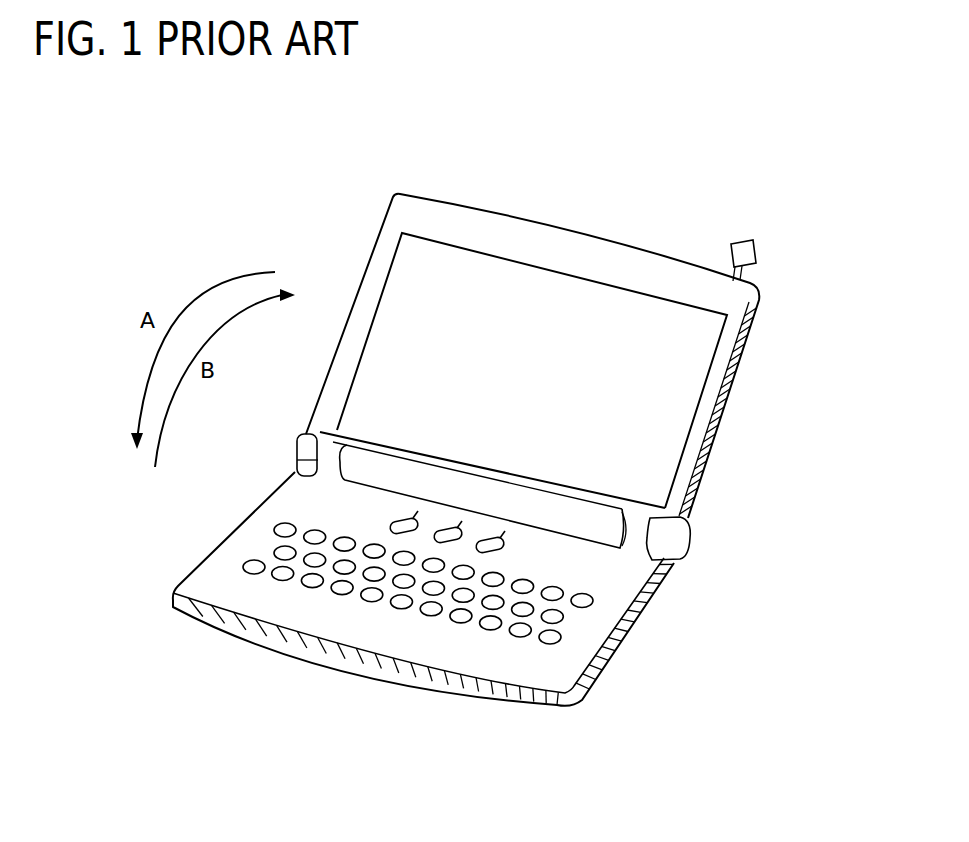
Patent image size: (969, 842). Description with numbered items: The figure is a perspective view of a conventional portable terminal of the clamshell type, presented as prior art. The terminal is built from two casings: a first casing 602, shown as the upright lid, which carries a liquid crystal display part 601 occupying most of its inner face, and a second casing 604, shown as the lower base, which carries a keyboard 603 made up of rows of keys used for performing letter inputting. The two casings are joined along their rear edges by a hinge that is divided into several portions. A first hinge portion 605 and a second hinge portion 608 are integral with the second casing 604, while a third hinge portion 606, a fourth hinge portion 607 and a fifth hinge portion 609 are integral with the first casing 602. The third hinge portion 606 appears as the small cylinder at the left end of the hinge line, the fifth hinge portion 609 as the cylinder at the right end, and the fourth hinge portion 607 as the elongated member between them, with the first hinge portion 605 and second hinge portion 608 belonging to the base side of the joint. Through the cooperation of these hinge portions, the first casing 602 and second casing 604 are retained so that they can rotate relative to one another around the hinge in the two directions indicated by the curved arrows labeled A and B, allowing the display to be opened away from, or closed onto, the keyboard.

The liquid crystal display part 601 is at (545, 290).
The first casing 602 is at (740, 308).
The keyboard 603 is at (243, 567).
The second casing 604 is at (553, 662).
The first hinge portion 605 is at (632, 545).
The third hinge portion 606 is at (302, 450).
The fourth hinge portion 607 is at (595, 518).
The second hinge portion 608 is at (326, 461).
The fifth hinge portion 609 is at (667, 538).